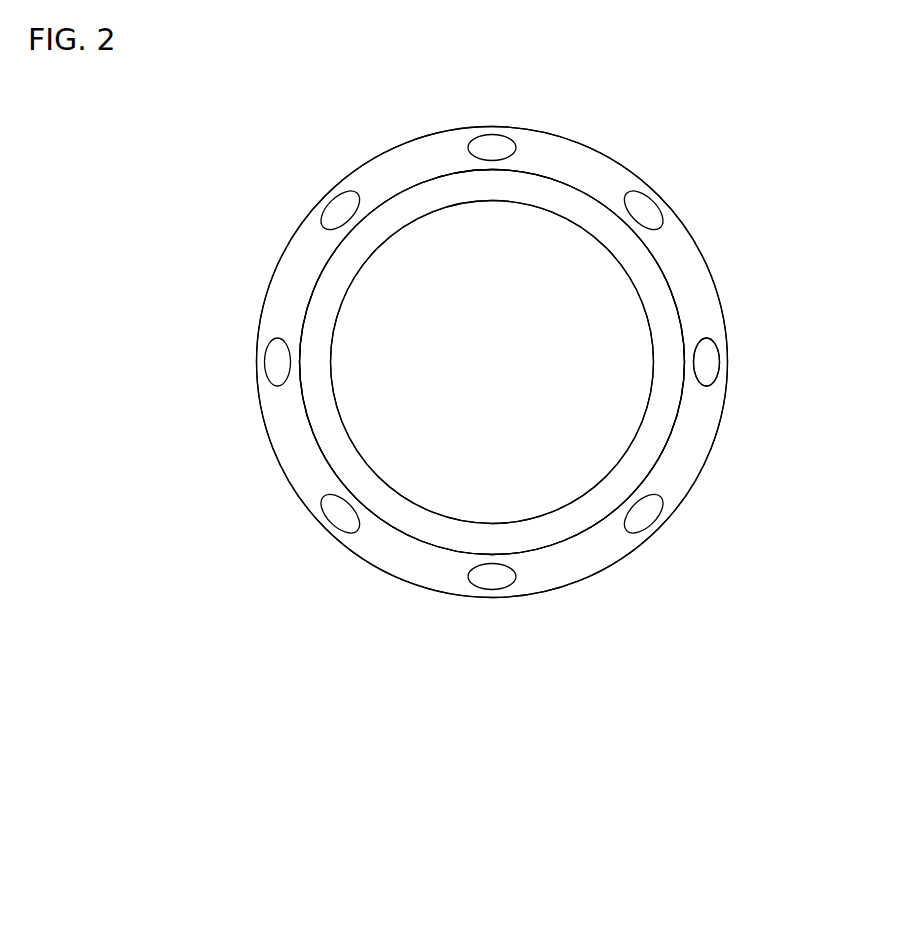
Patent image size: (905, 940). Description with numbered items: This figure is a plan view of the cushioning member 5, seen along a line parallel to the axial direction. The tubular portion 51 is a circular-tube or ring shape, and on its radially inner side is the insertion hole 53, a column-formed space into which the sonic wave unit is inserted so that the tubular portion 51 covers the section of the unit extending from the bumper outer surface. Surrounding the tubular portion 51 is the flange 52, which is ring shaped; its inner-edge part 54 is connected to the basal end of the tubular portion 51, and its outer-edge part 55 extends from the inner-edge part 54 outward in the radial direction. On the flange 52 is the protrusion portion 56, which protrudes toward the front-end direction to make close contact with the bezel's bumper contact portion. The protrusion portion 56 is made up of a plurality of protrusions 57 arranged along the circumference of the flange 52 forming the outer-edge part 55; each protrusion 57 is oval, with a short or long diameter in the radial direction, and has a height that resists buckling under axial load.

The cushioning member 5 is at (262, 140).
The tubular portion 51 is at (653, 278).
The flange 52 is at (700, 303).
The insertion hole 53 is at (552, 238).
The inner-edge part 54 is at (672, 440).
The outer-edge part 55 is at (695, 482).
The protrusion portion 56 is at (718, 345).
The protrusions 57 is at (502, 148).